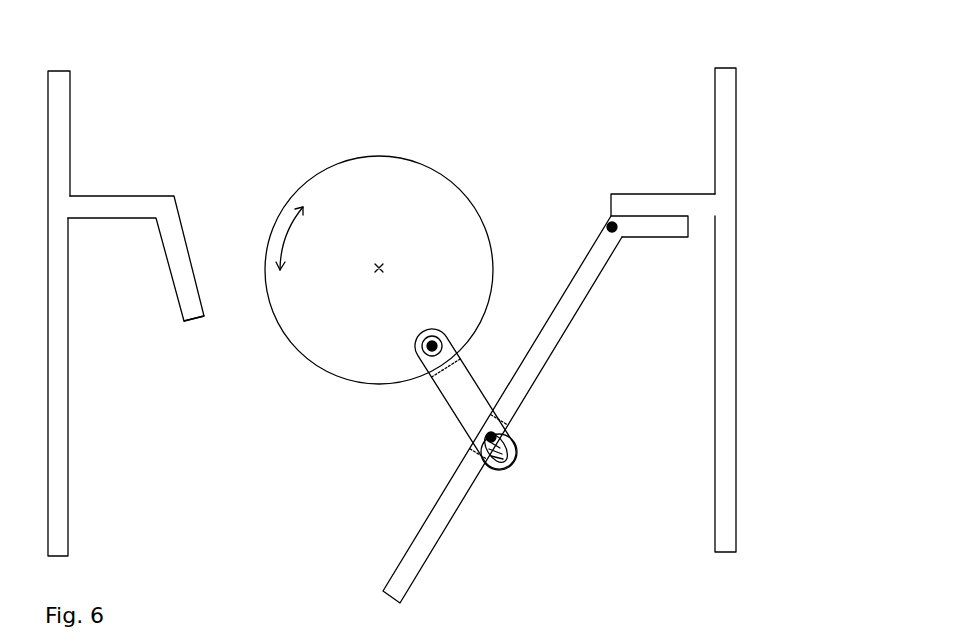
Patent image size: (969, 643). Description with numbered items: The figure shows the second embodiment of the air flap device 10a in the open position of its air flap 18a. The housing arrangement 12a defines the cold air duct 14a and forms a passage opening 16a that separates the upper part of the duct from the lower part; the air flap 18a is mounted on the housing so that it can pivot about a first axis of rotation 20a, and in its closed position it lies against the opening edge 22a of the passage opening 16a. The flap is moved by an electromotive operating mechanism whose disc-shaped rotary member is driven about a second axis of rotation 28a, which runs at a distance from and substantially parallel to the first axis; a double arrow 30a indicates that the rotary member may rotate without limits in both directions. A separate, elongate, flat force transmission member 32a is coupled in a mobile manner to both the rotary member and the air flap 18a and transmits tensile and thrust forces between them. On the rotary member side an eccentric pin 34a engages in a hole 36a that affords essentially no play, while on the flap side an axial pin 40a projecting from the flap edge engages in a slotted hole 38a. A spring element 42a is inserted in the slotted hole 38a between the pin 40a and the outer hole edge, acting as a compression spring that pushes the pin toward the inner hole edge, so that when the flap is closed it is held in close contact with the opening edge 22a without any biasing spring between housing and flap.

The air flap device 10a is at (688, 68).
The housing arrangement 12a is at (737, 100).
The cold air duct 14a is at (258, 72).
The passage opening 16a is at (203, 318).
The air flap 18a is at (381, 591).
The first axis of rotation 20a is at (612, 224).
The opening edge 22a is at (196, 319).
The second axis of rotation 28a is at (373, 268).
The double arrow 30a is at (283, 238).
The force transmission member 32a is at (466, 356).
The eccentric pin 34a is at (428, 336).
The hole 36a is at (444, 338).
The slotted hole 38a is at (501, 470).
The axial pin 40a is at (506, 437).
The spring element 42a is at (491, 466).